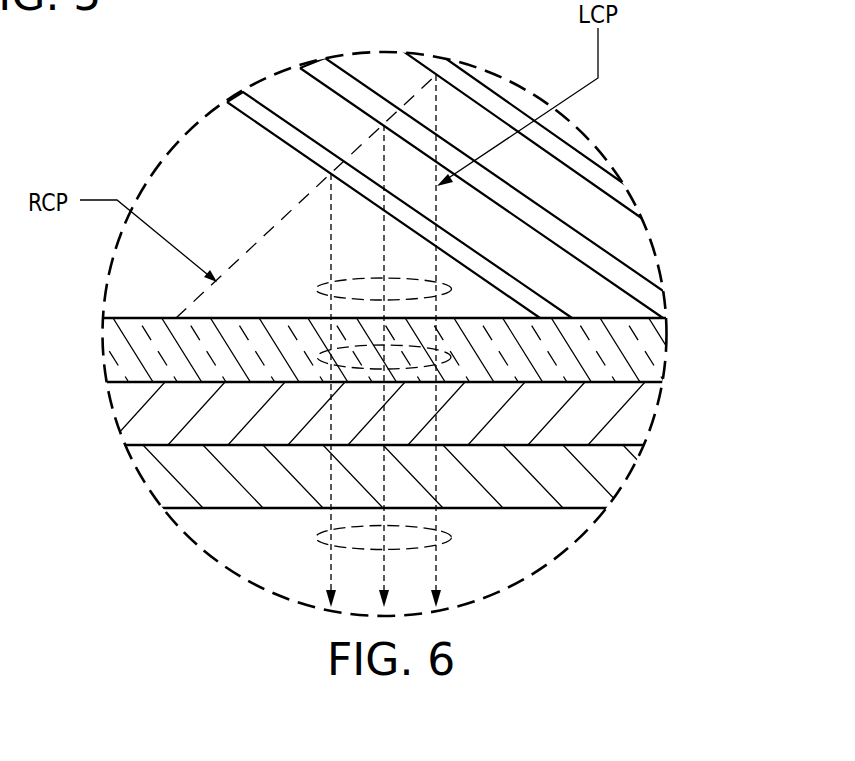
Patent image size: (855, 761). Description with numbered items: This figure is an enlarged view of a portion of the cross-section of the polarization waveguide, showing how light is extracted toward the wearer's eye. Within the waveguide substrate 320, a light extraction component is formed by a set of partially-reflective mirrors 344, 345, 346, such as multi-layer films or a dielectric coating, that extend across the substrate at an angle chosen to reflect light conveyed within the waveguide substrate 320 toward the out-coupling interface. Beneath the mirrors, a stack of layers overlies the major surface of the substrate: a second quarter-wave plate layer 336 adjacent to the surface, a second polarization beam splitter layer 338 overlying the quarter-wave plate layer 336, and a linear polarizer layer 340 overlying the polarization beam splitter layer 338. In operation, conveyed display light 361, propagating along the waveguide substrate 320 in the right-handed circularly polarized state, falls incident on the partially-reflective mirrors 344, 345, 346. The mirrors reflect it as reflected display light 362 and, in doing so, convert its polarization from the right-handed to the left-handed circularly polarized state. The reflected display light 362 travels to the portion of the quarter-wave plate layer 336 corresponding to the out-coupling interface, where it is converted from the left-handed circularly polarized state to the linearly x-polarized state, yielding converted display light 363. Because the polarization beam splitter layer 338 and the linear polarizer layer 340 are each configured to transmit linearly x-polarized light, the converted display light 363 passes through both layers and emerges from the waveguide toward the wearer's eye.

The waveguide substrate 320 is at (168, 306).
The second quarter-wave plate layer 336 is at (108, 348).
The second polarization beam splitter layer 338 is at (113, 397).
The linear polarizer layer 340 is at (465, 497).
The partially-reflective mirror 344 is at (243, 116).
The partially-reflective mirror 345 is at (362, 82).
The partially-reflective mirror 346 is at (507, 100).
The conveyed display light 361 is at (253, 247).
The reflected display light 362 is at (315, 290).
The converted display light 363 is at (317, 357).